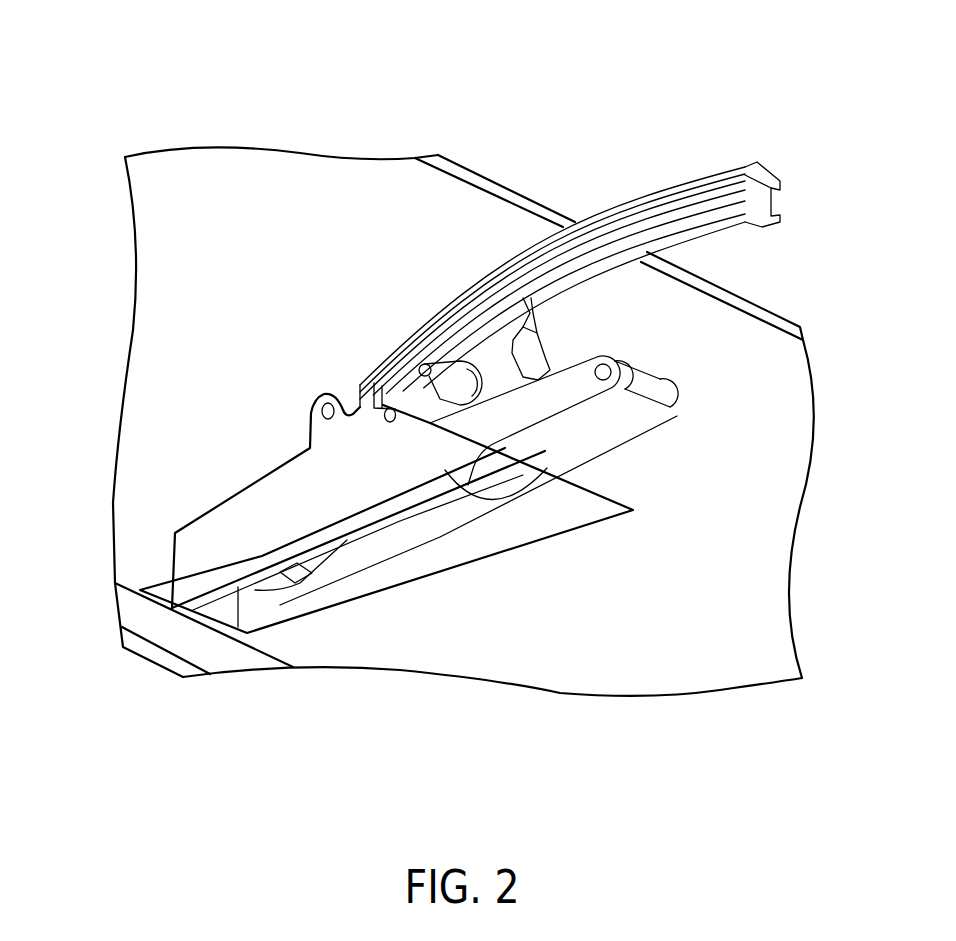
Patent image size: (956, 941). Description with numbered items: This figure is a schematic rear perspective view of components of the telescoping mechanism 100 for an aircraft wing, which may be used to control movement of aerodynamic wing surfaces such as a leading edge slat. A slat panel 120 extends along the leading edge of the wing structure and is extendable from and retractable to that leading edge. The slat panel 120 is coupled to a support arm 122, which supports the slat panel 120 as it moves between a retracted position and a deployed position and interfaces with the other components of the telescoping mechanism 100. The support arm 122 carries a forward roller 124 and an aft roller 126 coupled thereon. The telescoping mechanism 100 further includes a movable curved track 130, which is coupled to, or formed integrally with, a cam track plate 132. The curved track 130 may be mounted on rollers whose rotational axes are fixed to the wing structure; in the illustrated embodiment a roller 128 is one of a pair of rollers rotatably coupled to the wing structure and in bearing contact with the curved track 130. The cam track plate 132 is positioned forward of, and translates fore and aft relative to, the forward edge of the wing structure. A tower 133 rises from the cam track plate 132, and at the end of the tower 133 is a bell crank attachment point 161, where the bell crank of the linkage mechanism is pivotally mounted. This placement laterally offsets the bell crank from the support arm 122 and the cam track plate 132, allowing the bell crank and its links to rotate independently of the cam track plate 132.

The telescoping mechanism 100 is at (108, 90).
The slat panel 120 is at (182, 435).
The support arm 122 is at (395, 477).
The forward roller 124 is at (385, 392).
The aft roller 126 is at (672, 410).
The roller 128 is at (320, 397).
The curved track 130 is at (727, 190).
The cam track plate 132 is at (495, 347).
The tower 133 is at (547, 472).
The bell crank attachment point 161 is at (430, 375).